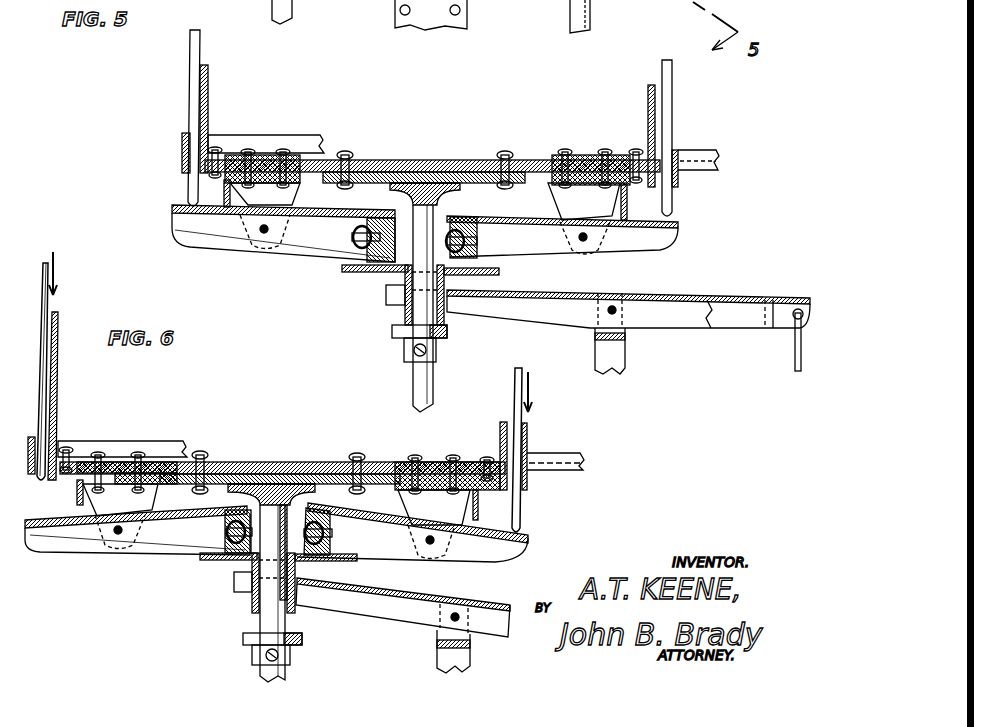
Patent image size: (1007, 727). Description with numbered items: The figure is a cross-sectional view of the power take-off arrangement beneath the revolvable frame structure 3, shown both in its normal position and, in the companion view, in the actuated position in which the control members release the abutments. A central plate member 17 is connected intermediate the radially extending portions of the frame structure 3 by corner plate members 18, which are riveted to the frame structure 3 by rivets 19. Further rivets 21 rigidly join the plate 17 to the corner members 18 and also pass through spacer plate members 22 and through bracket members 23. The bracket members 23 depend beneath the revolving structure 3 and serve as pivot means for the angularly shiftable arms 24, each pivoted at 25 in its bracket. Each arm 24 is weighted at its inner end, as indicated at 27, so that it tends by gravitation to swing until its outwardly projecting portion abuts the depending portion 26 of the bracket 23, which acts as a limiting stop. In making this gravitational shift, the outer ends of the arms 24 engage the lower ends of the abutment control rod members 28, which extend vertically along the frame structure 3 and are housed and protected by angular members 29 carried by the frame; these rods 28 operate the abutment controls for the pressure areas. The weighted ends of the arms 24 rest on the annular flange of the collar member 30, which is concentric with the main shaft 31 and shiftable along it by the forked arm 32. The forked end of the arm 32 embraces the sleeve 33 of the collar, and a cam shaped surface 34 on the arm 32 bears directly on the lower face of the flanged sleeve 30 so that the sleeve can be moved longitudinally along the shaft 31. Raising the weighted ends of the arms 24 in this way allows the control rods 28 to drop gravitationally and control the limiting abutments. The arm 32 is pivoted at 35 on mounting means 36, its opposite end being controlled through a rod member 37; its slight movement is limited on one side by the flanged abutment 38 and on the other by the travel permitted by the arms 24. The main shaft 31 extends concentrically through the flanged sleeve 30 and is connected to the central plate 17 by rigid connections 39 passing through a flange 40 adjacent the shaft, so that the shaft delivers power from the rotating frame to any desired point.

In FIG. 5, the revolvable frame structure 3 is at (300, 138).
In FIG. 5, the plate member 17 is at (396, 160).
In FIG. 6, the plate member 17 is at (276, 462).
In FIG. 5, the corner plate members 18 is at (588, 160).
In FIG. 6, the corner plate members 18 is at (150, 460).
In FIG. 5, the rivets 19 is at (218, 150).
In FIG. 6, the rivets 19 is at (66, 450).
In FIG. 5, the rivets 21 is at (283, 150).
In FIG. 6, the rivets 21 is at (136, 452).
In FIG. 5, the spacer plate members 22 is at (225, 175).
In FIG. 6, the spacer plate members 22 is at (78, 487).
In FIG. 5, the bracket members 23 is at (262, 198).
In FIG. 6, the bracket members 23 is at (110, 500).
In FIG. 5, the arms 24 is at (310, 238).
In FIG. 6, the arms 24 is at (160, 530).
In FIG. 5, the pivot 25 is at (264, 236).
In FIG. 6, the pivot 25 is at (118, 536).
In FIG. 5, the depending portion 26 is at (226, 206).
In FIG. 6, the depending portion 26 is at (80, 518).
In FIG. 5, the weighted inner end 27 is at (360, 238).
In FIG. 6, the weighted inner end 27 is at (228, 536).
In FIG. 5, the abutment control rod members 28 is at (192, 90).
In FIG. 6, the abutment control rod members 28 is at (52, 306).
In FIG. 5, the angular members 29 is at (204, 76).
In FIG. 6, the angular members 29 is at (50, 356).
In FIG. 5, the collar member 30 is at (366, 273).
In FIG. 6, the collar member 30 is at (222, 562).
In FIG. 5, the main shaft 31 is at (430, 225).
In FIG. 6, the main shaft 31 is at (290, 464).
In FIG. 5, the forked arm 32 is at (470, 316).
In FIG. 6, the forked arm 32 is at (347, 608).
In FIG. 5, the sleeve 33 is at (438, 332).
In FIG. 6, the sleeve 33 is at (296, 613).
In FIG. 5, the cam shaped surface 34 is at (400, 313).
In FIG. 6, the cam shaped surface 34 is at (300, 574).
In FIG. 5, the pivot 35 is at (625, 304).
In FIG. 6, the pivot 35 is at (460, 622).
In FIG. 5, the mounting means 36 is at (620, 365).
In FIG. 6, the mounting means 36 is at (436, 664).
In FIG. 5, the rod member 37 is at (792, 356).
In FIG. 5, the flanged abutment 38 is at (402, 340).
In FIG. 6, the flanged abutment 38 is at (245, 642).
In FIG. 5, the rigid connections 39 is at (348, 160).
In FIG. 6, the rigid connections 39 is at (203, 455).
In FIG. 5, the flange 40 is at (436, 166).
In FIG. 6, the flange 40 is at (226, 468).